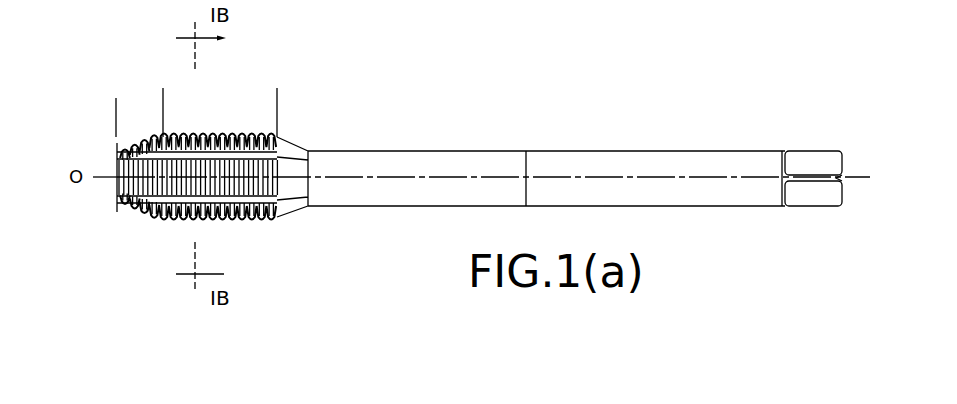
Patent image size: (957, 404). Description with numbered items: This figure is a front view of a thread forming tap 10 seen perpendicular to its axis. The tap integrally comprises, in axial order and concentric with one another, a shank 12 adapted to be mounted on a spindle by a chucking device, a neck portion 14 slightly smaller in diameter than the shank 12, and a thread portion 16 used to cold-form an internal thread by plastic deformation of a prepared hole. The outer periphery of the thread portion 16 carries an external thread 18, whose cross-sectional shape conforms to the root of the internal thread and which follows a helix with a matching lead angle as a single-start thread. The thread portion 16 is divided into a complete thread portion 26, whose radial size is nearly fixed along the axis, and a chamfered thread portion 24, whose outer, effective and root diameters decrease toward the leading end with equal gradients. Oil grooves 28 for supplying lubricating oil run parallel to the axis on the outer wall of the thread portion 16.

The thread forming tap 10 is at (646, 78).
The shank 12 is at (673, 165).
The neck portion 14 is at (410, 163).
The thread portion 16 is at (161, 252).
The thread 18 is at (232, 222).
The chamfered thread portion 24 is at (163, 103).
The complete thread portion 26 is at (277, 103).
The oil grooves 28 is at (241, 153).